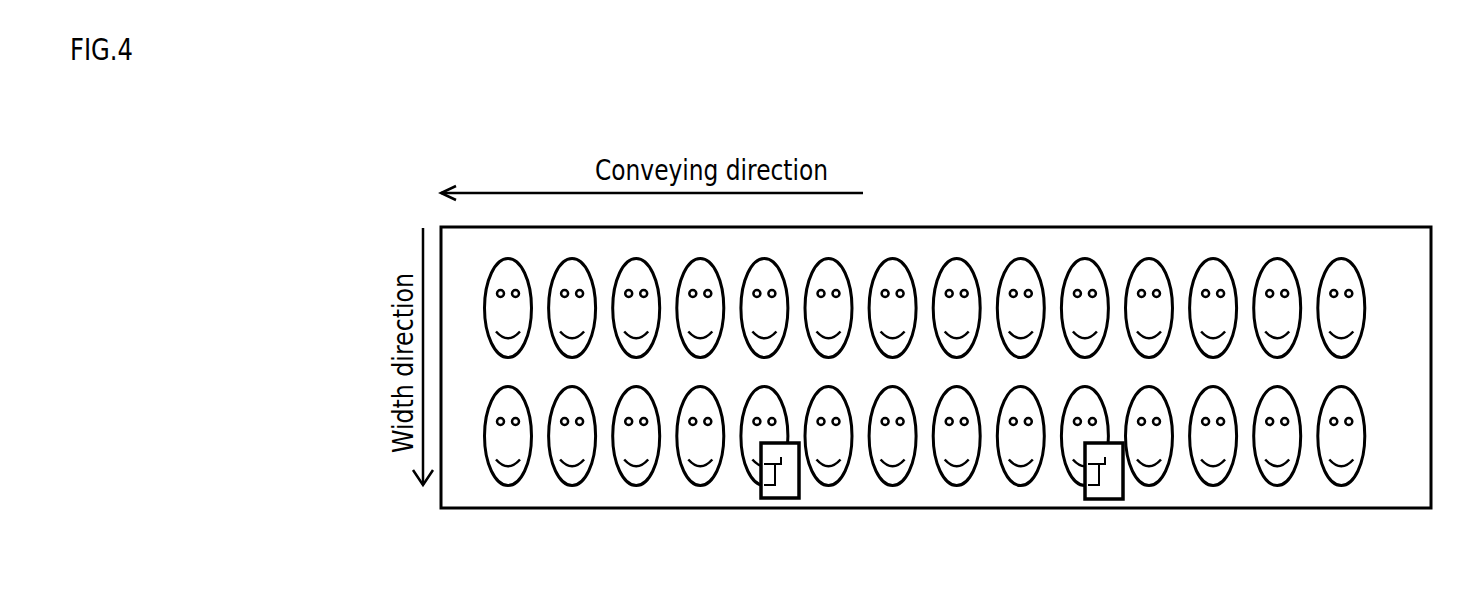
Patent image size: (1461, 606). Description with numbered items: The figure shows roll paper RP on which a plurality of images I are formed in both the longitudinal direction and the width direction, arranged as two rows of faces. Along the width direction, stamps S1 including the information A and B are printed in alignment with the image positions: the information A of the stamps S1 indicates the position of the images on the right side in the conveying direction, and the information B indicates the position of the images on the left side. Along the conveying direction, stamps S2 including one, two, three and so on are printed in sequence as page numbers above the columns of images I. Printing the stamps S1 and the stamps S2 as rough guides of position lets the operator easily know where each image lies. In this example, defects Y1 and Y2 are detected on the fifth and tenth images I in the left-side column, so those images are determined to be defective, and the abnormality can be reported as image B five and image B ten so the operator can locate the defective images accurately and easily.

The roll paper RP is at (1333, 508).
The image I is at (1365, 268).
The defect Y1 is at (779, 499).
The defect Y2 is at (1102, 499).
The stamp S1 is at (468, 283).
The stamp S2 is at (513, 247).